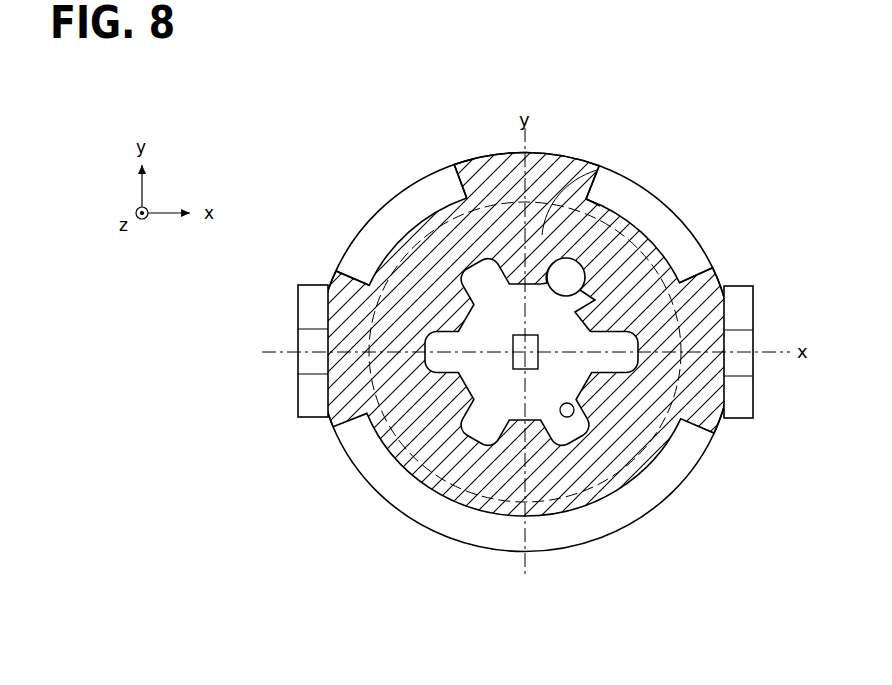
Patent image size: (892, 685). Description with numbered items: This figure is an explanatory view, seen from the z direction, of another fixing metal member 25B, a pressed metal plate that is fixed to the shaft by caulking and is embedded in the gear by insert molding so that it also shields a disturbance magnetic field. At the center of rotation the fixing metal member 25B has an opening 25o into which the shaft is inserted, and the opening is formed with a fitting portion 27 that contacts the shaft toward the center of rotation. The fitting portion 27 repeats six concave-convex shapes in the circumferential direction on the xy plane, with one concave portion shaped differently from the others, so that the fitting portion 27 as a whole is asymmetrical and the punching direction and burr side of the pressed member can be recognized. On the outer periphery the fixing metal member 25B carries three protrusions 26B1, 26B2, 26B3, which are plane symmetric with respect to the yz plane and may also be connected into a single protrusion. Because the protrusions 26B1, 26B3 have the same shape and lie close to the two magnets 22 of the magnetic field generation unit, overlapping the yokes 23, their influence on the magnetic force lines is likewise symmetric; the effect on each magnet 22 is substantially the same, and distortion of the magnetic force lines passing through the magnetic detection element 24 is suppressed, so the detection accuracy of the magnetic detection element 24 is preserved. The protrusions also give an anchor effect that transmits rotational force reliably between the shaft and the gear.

The magnet 22 is at (297, 367).
The yoke 23 is at (400, 492).
The magnetic detection element 24 is at (513, 333).
The fixing metal member 25B is at (598, 170).
The opening 25o is at (555, 402).
The protrusion 26B1 is at (340, 264).
The protrusion 26B2 is at (454, 168).
The protrusion 26B3 is at (714, 269).
The fitting portion 27 is at (590, 292).